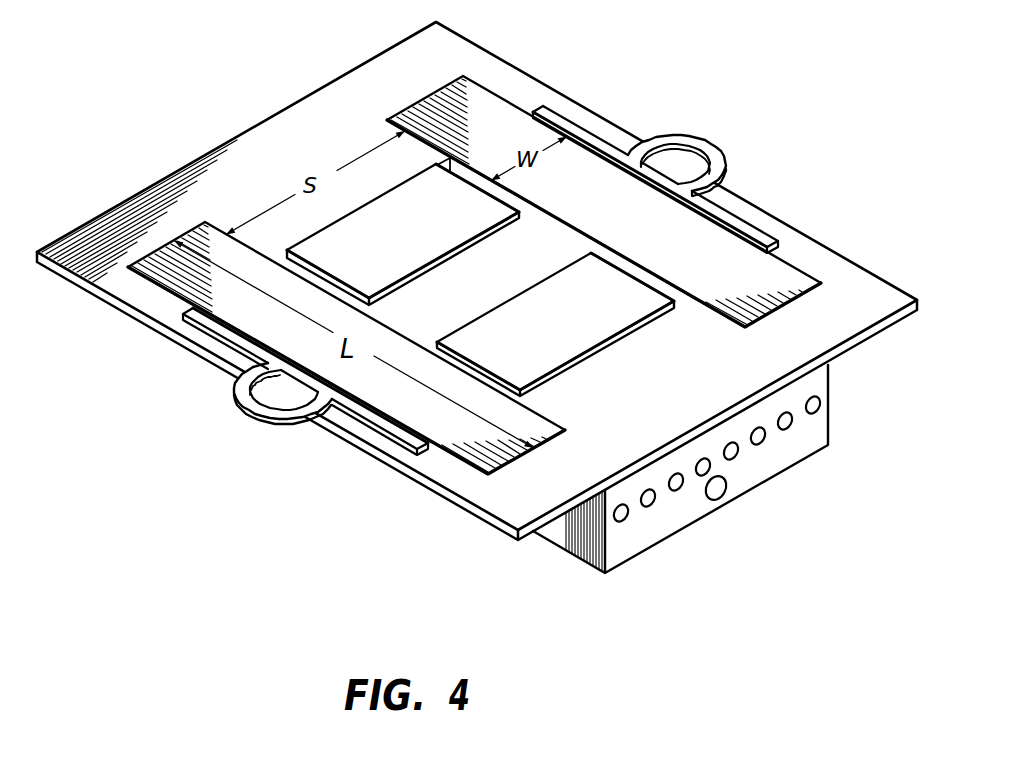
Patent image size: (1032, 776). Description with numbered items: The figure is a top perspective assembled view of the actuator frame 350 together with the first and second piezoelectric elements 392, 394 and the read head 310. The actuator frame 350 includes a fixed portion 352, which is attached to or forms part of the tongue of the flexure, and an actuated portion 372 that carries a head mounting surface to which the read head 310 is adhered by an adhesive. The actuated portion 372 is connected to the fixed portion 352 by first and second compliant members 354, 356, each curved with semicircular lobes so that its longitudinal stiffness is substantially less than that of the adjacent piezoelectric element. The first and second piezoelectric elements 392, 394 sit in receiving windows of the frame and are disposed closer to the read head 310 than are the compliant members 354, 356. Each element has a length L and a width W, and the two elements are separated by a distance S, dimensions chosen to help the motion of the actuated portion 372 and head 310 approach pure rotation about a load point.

The actuator frame 350 is at (249, 129).
The fixed portion 352 is at (400, 232).
The actuated portion 372 is at (591, 341).
The first compliant member 354 is at (695, 137).
The second compliant member 356 is at (261, 421).
The first piezoelectric element 392 is at (574, 200).
The second piezoelectric element 394 is at (381, 338).
The read head 310 is at (771, 460).